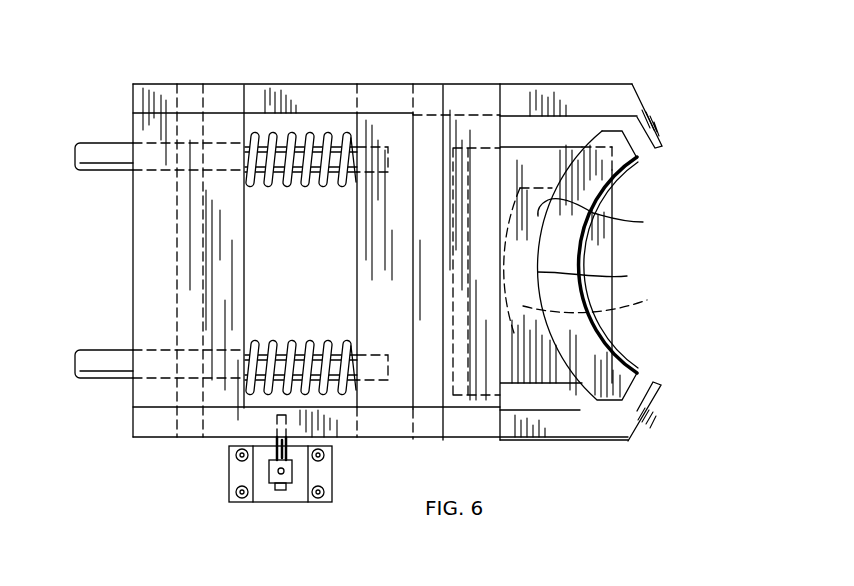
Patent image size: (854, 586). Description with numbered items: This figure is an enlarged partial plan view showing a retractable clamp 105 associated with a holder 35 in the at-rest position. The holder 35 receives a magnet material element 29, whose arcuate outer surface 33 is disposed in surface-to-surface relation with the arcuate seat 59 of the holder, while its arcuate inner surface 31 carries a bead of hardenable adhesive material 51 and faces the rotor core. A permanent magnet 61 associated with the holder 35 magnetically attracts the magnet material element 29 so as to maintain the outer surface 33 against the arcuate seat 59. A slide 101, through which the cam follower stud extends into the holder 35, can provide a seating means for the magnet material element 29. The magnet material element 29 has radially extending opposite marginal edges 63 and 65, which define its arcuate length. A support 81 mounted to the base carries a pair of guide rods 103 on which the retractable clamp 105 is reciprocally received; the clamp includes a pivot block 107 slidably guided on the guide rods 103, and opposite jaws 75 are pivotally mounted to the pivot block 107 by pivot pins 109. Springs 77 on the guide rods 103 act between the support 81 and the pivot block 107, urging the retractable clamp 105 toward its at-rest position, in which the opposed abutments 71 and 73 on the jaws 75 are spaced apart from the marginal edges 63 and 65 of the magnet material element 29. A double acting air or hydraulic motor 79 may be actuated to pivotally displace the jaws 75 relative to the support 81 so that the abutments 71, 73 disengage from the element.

The magnet material element 29 is at (583, 247).
The arcuate inner surface 31 is at (607, 191).
The arcuate outer surface 33 is at (601, 265).
The holder 35 is at (540, 162).
The hardenable adhesive material 51 is at (620, 362).
The arcuate seat 59 is at (595, 277).
The permanent magnet 61 is at (600, 301).
The marginal edge 63 is at (637, 390).
The marginal edge 65 is at (632, 142).
The abutment 71 is at (666, 394).
The abutment 73 is at (662, 136).
The jaw 75 is at (565, 102).
The spring 77 is at (316, 187).
The double acting air or hydraulic motor 79 is at (292, 502).
The support 81 is at (357, 250).
The slide 101 is at (612, 318).
The guide rod 103 is at (110, 153).
The retractable clamp 105 is at (160, 477).
The pivot block 107 is at (133, 249).
The pivot pin 109 is at (177, 415).